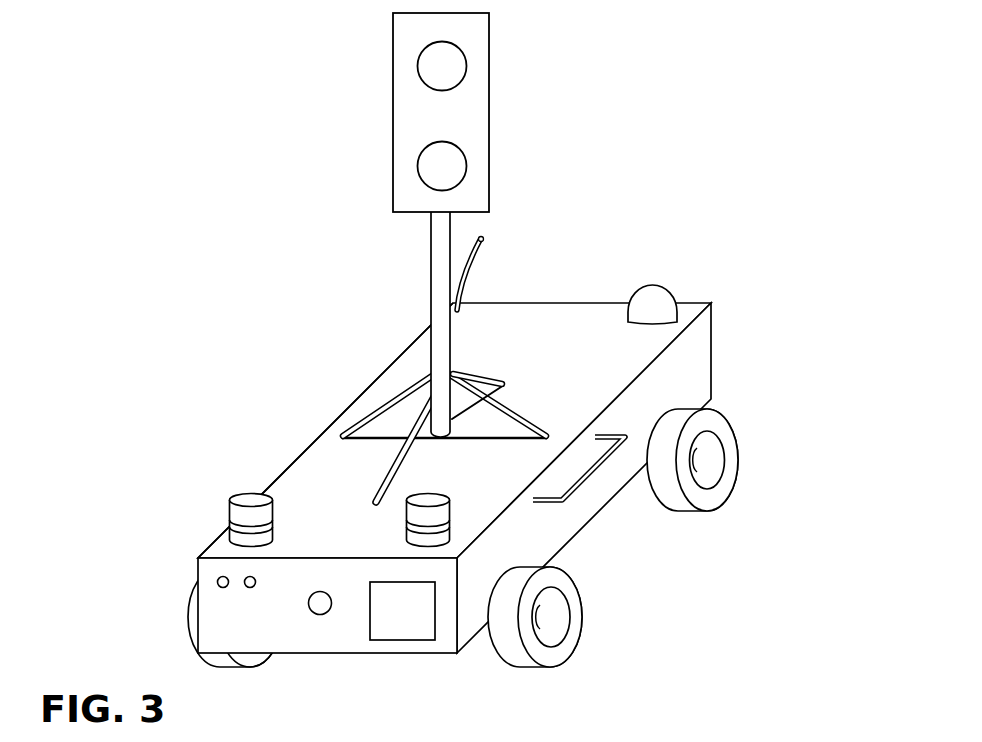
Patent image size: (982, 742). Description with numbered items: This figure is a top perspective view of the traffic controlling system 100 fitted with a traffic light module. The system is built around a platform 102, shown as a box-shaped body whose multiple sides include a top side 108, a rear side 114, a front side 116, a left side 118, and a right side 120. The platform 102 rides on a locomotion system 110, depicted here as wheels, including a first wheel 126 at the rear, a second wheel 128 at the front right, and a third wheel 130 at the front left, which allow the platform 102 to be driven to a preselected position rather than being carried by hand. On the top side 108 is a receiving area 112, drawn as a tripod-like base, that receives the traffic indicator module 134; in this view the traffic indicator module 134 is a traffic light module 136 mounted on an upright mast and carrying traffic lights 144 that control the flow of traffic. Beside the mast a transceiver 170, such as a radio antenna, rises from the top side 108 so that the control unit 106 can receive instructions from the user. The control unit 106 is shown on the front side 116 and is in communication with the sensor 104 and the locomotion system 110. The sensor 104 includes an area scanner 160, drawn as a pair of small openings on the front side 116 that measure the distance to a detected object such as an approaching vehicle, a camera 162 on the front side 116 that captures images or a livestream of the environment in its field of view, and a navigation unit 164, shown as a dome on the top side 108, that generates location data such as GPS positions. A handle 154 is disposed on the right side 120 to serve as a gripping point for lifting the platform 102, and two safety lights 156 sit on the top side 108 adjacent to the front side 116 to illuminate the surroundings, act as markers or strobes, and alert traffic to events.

The traffic controlling system 100 is at (271, 269).
The platform 102 is at (504, 467).
The sensor 104 is at (407, 457).
The control unit 106 is at (400, 633).
The top side 108 is at (391, 398).
The locomotion system 110 is at (182, 617).
The receiving area 112 is at (380, 468).
The rear side 114 is at (548, 300).
The front side 116 is at (243, 625).
The left side 118 is at (342, 406).
The right side 120 is at (692, 355).
The first wheel 126 is at (737, 460).
The second wheel 128 is at (582, 617).
The third wheel 130 is at (188, 613).
The traffic indicator module 134 is at (491, 62).
The traffic light module 136 is at (504, 116).
The traffic lights 144 is at (456, 112).
The handle 154 is at (570, 498).
The safety light 156 is at (227, 512).
The area scanner 160 is at (248, 577).
The camera 162 is at (319, 615).
The navigation unit 164 is at (658, 283).
The transceiver 170 is at (479, 263).